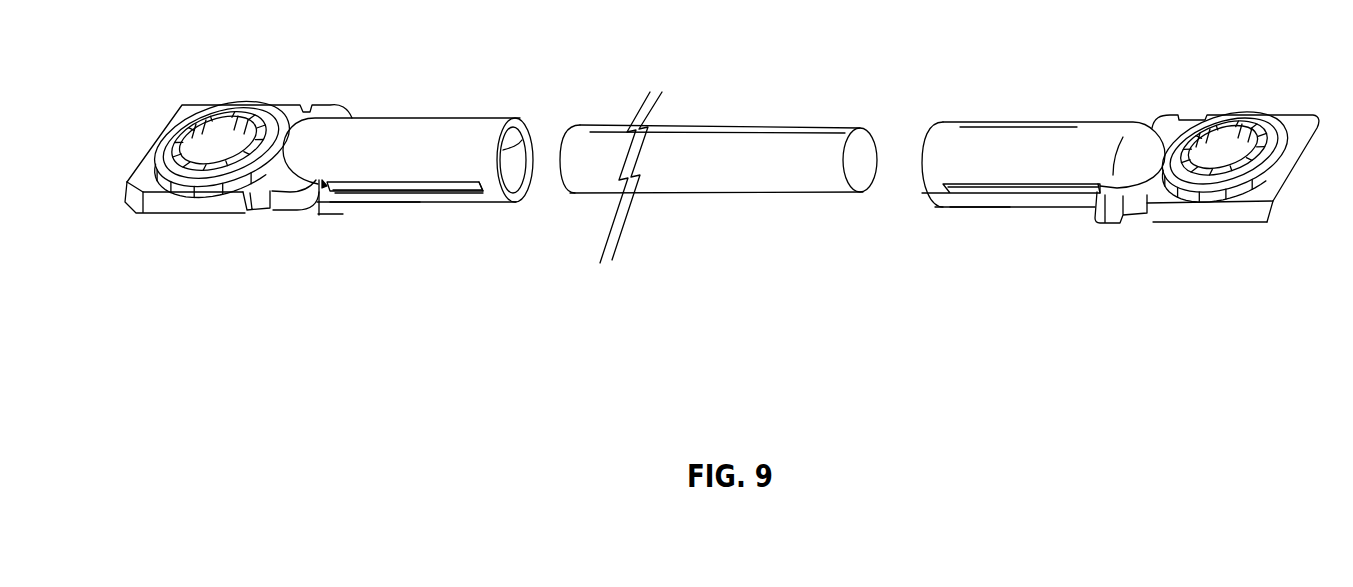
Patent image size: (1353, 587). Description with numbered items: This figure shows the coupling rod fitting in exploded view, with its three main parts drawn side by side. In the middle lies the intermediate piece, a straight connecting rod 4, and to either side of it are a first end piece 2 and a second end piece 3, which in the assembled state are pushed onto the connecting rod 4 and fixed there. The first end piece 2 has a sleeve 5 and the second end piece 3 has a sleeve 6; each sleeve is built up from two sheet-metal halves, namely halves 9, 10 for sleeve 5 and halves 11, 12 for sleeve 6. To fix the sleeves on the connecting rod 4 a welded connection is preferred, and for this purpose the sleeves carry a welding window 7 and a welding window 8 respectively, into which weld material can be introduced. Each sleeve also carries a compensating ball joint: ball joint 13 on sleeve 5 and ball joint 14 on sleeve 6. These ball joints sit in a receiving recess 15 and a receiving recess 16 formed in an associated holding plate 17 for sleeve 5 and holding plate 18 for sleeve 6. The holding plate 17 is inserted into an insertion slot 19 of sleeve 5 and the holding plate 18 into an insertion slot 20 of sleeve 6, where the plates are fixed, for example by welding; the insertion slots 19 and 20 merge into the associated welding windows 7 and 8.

The first end piece 2 is at (329, 153).
The second end piece 3 is at (1125, 168).
The connecting rod 4 is at (768, 177).
The sleeve 5 is at (385, 206).
The sleeve 6 is at (1022, 209).
The welding window 7 is at (440, 187).
The welding window 8 is at (1072, 193).
The sheet-metal half 9 is at (340, 206).
The sheet-metal half 10 is at (447, 140).
The sheet-metal half 11 is at (967, 209).
The sheet-metal half 12 is at (1047, 157).
The compensating ball joint 13 is at (217, 130).
The compensating ball joint 14 is at (1225, 142).
The receiving recess 15 is at (232, 167).
The receiving recess 16 is at (1234, 173).
The holding plate 17 is at (147, 192).
The holding plate 18 is at (1265, 193).
The insertion slot 19 is at (320, 190).
The insertion slot 20 is at (1097, 207).